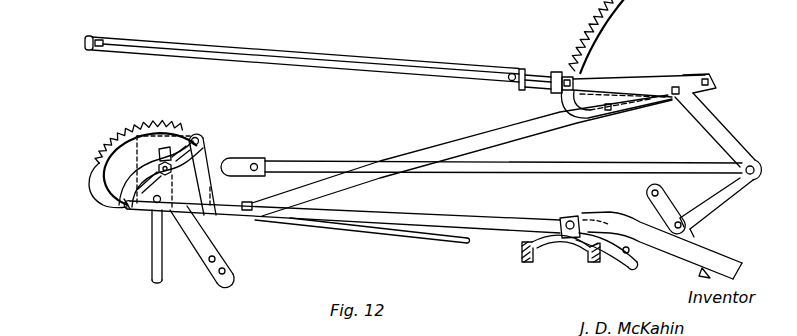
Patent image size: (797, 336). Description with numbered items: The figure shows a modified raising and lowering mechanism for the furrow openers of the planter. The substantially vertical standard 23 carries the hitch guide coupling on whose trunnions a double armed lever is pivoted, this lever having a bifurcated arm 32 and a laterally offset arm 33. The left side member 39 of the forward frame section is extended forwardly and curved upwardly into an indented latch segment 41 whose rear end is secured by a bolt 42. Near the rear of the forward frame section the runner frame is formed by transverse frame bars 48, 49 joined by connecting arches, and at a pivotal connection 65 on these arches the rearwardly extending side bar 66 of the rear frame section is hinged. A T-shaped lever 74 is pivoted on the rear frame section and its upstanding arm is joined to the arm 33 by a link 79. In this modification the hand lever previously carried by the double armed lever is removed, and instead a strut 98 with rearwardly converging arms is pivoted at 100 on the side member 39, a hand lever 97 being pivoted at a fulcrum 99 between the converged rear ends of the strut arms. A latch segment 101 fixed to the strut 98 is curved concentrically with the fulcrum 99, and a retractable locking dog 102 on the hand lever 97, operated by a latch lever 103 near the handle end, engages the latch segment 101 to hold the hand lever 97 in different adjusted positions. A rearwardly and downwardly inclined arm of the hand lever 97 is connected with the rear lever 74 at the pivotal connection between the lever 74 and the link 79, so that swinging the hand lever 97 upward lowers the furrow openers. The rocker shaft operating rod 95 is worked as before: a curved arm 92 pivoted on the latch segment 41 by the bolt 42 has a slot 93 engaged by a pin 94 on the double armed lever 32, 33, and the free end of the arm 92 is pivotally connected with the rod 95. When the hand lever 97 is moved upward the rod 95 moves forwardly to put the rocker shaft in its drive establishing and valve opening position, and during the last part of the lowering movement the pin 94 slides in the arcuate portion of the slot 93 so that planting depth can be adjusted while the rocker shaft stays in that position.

The standard 23 is at (152, 263).
The bifurcated arm 32 is at (225, 283).
The arm 33 is at (236, 158).
The side member 39 is at (443, 213).
The latch segment 41 is at (108, 142).
The bolt 42 is at (201, 139).
The frame bar 48 is at (522, 254).
The frame bar 49 is at (601, 255).
The pivotal connection 65 is at (571, 222).
The side bar 66 is at (726, 262).
The T-shaped lever 74 is at (726, 193).
The link 79 is at (614, 163).
The curved arm 92 is at (127, 207).
The slot 93 is at (142, 177).
The pin 94 is at (167, 173).
The rod 95 is at (446, 240).
The hand lever 97 is at (362, 62).
The strut 98 is at (474, 138).
The fulcrum 99 is at (676, 86).
The pivot 100 is at (248, 212).
The latch segment 101 is at (600, 29).
The retractable locking dog 102 is at (540, 71).
The latch lever 103 is at (99, 47).